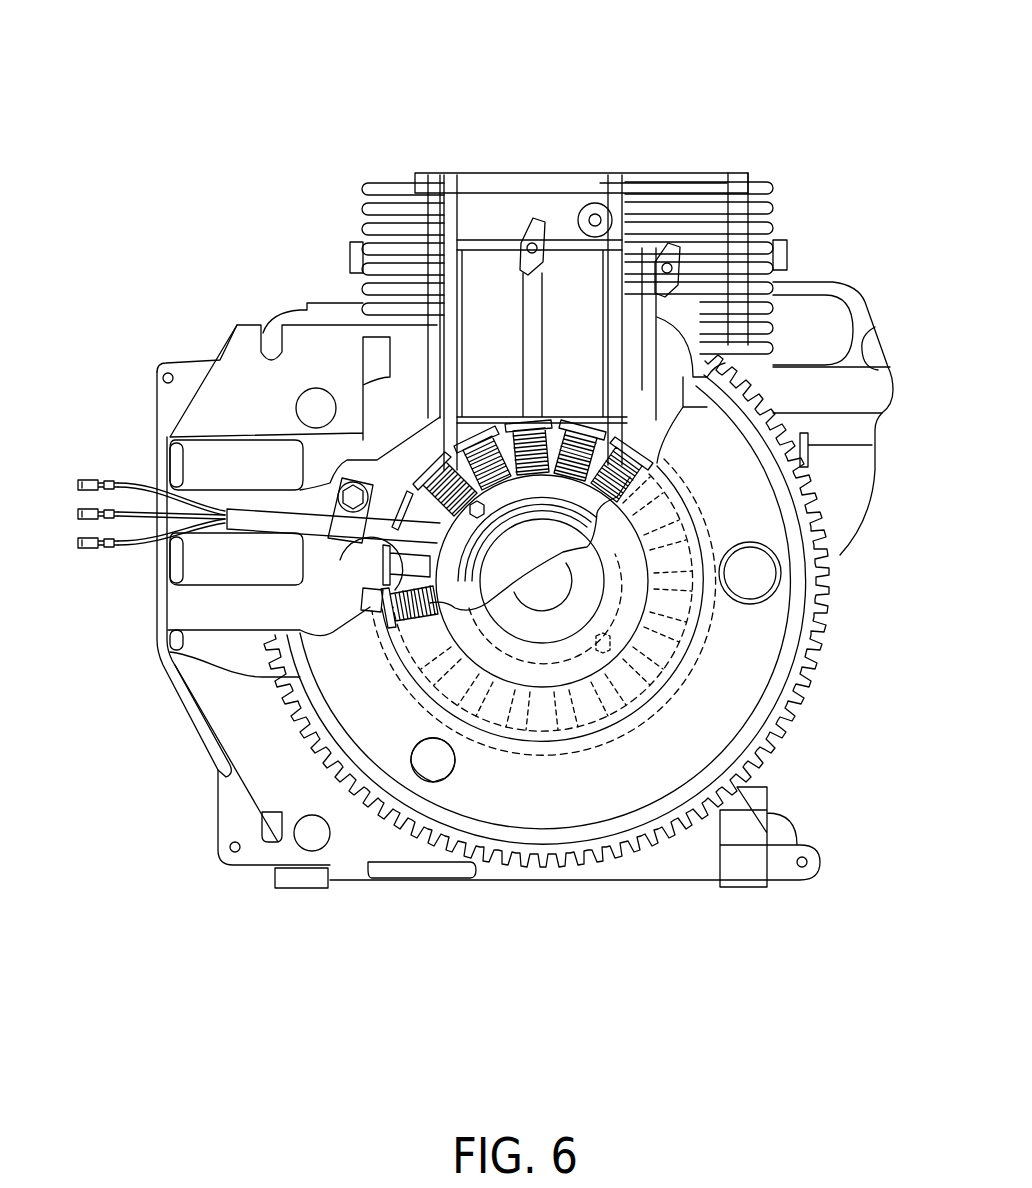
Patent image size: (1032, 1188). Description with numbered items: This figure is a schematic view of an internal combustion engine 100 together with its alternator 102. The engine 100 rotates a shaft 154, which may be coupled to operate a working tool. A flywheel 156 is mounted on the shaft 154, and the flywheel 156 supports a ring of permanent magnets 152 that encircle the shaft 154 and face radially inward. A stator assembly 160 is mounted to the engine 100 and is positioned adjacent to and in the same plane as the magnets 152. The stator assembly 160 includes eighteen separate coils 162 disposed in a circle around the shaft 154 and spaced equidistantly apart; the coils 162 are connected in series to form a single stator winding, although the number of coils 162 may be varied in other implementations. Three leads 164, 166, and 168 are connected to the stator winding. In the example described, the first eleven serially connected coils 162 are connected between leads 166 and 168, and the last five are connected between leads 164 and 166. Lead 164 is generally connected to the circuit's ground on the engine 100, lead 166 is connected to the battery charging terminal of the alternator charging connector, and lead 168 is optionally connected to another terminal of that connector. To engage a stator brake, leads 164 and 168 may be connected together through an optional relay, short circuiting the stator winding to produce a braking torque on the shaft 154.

The internal combustion engine 100 is at (628, 104).
The alternator 102 is at (676, 702).
The permanent magnets 152 is at (707, 517).
The shaft 154 is at (563, 577).
The flywheel 156 is at (781, 657).
The stator assembly 160 is at (397, 463).
The coils 162 is at (583, 420).
The lead 164 is at (85, 480).
The lead 166 is at (80, 512).
The lead 168 is at (85, 548).